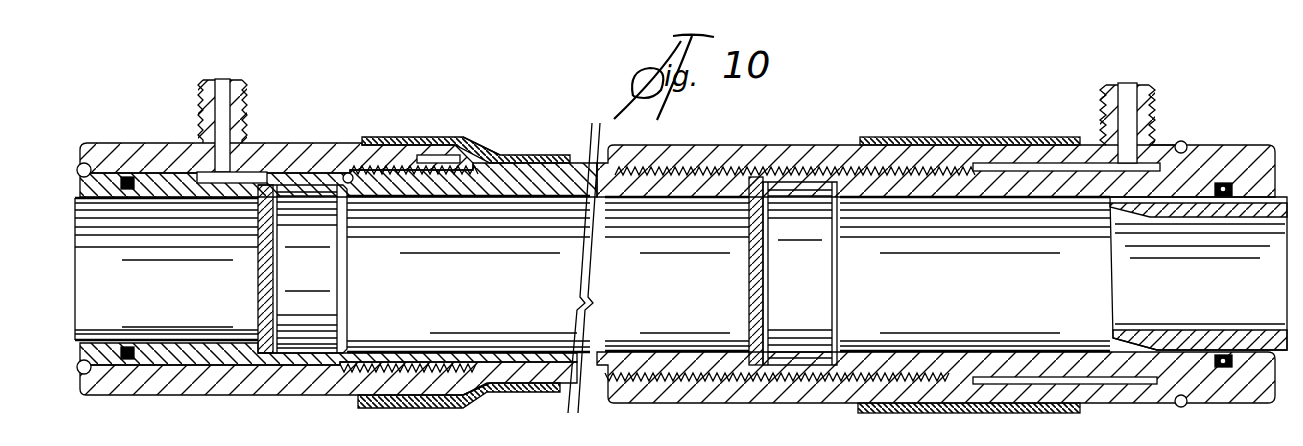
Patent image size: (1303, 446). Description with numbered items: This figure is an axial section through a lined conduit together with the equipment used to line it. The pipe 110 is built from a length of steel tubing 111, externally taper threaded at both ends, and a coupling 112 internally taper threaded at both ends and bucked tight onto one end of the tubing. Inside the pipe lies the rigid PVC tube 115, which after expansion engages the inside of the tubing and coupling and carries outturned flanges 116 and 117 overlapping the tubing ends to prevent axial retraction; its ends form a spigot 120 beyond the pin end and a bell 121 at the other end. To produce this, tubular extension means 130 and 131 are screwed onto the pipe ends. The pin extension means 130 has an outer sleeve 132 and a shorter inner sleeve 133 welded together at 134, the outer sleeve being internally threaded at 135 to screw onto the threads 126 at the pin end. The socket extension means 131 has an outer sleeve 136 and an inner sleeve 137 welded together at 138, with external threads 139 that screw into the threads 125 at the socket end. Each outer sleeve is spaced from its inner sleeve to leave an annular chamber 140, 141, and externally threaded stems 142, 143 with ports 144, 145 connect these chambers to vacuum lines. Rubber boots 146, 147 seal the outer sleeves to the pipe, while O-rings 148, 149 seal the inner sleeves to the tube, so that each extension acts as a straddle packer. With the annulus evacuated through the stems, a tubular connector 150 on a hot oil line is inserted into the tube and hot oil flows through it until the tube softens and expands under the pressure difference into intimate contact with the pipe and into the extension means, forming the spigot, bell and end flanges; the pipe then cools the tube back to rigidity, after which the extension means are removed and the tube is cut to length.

The pipe 110 is at (600, 397).
The tubing 111 is at (582, 152).
The coupling 112 is at (685, 150).
The tube 115 is at (477, 350).
The outturned flange 116 is at (348, 173).
The outturned flange 117 is at (752, 175).
The spigot 120 is at (297, 350).
The bell 121 is at (793, 363).
The threads 125 is at (850, 172).
The threads 126 is at (478, 145).
The pin extension means 130 is at (282, 134).
The socket extension means 131 is at (1266, 143).
The outer sleeve 132 is at (300, 156).
The inner sleeve 133 is at (157, 173).
The weld 134 is at (110, 143).
The internal threads 135 is at (380, 166).
The outer sleeve 136 is at (1162, 146).
The inner sleeve 137 is at (1222, 165).
The weld 138 is at (1185, 142).
The external threads 139 is at (950, 375).
The annular chamber 140 is at (261, 158).
The annular chamber 141 is at (1058, 167).
The externally threaded stem 142 is at (200, 100).
The externally threaded stem 143 is at (1151, 100).
The port 144 is at (223, 82).
The port 145 is at (1127, 90).
The rubber boot 146 is at (422, 137).
The rubber boot 147 is at (987, 137).
The O-ring 148 is at (127, 177).
The O-ring 149 is at (1222, 355).
The tubular connector 150 is at (1248, 340).